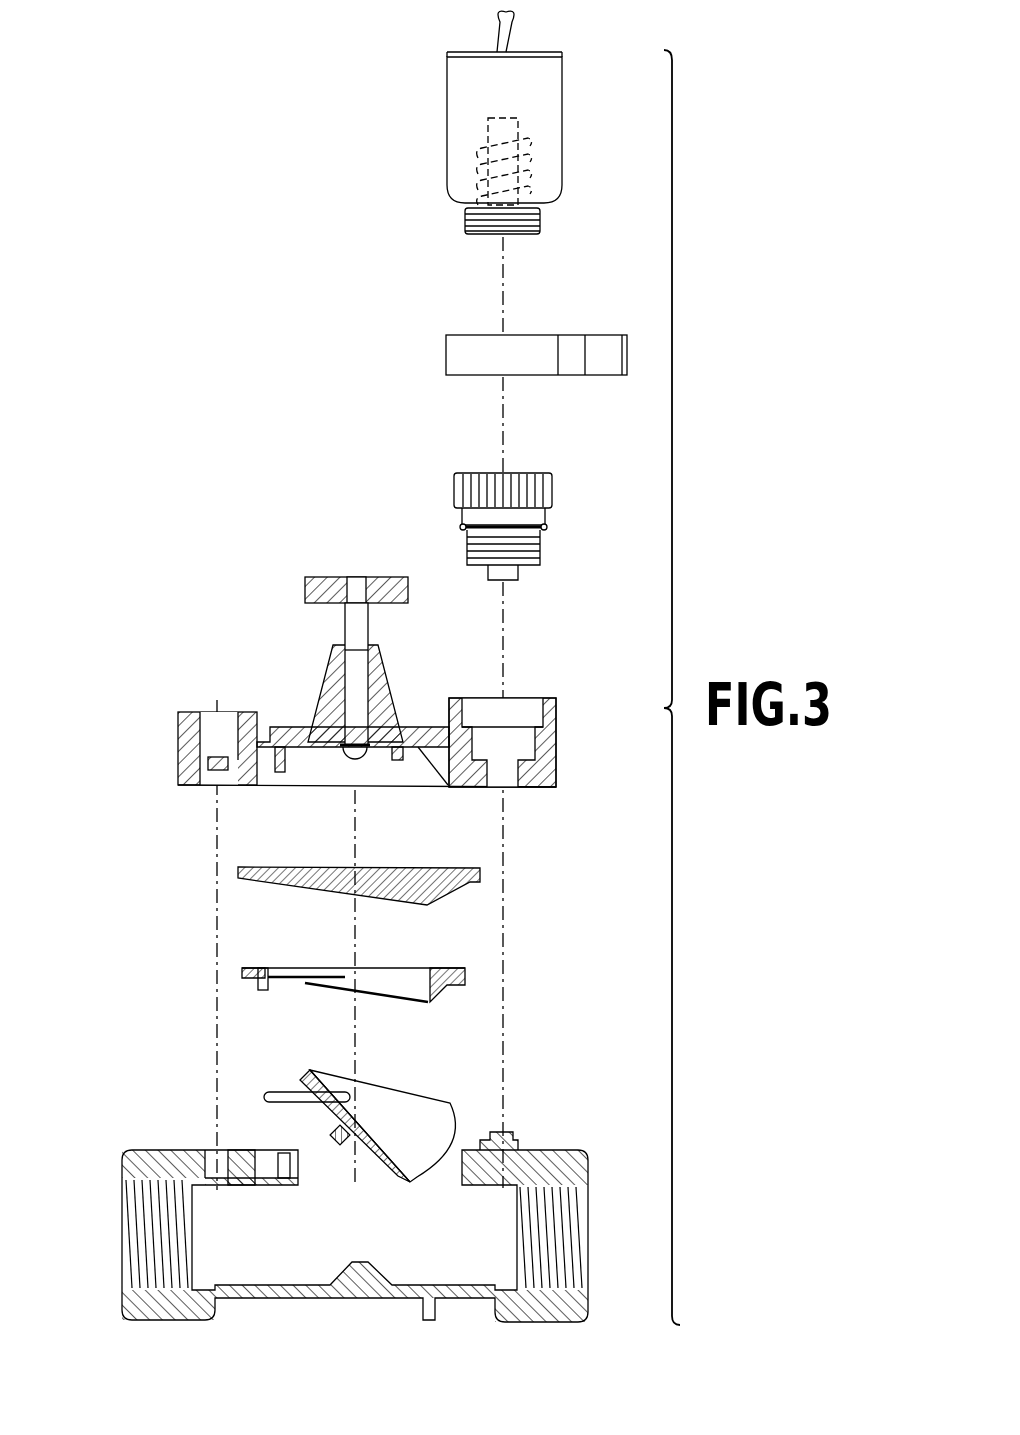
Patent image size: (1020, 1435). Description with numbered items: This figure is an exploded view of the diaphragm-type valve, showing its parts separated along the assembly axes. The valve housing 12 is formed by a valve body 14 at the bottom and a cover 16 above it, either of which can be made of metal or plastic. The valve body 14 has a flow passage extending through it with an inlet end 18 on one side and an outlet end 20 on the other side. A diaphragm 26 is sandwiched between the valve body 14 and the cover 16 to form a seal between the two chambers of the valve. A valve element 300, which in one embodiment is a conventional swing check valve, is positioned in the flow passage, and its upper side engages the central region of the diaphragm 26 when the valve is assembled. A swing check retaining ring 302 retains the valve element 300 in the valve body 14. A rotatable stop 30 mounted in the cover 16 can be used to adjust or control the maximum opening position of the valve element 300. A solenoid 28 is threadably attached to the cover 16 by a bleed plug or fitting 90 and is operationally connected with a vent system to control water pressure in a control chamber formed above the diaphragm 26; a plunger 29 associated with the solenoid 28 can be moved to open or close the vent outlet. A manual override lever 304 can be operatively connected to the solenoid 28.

The valve housing 12 is at (598, 1142).
The valve body 14 is at (590, 1165).
The cover 16 is at (558, 742).
The inlet end 18 is at (122, 1236).
The outlet end 20 is at (595, 1228).
The diaphragm 26 is at (478, 866).
The solenoid 28 is at (452, 82).
The plunger 29 is at (515, 132).
The rotatable stop 30 is at (305, 590).
The bleed plug or fitting 90 is at (552, 494).
The valve element 300 is at (432, 1102).
The swing check retaining ring 302 is at (245, 972).
The manual override lever 304 is at (462, 338).